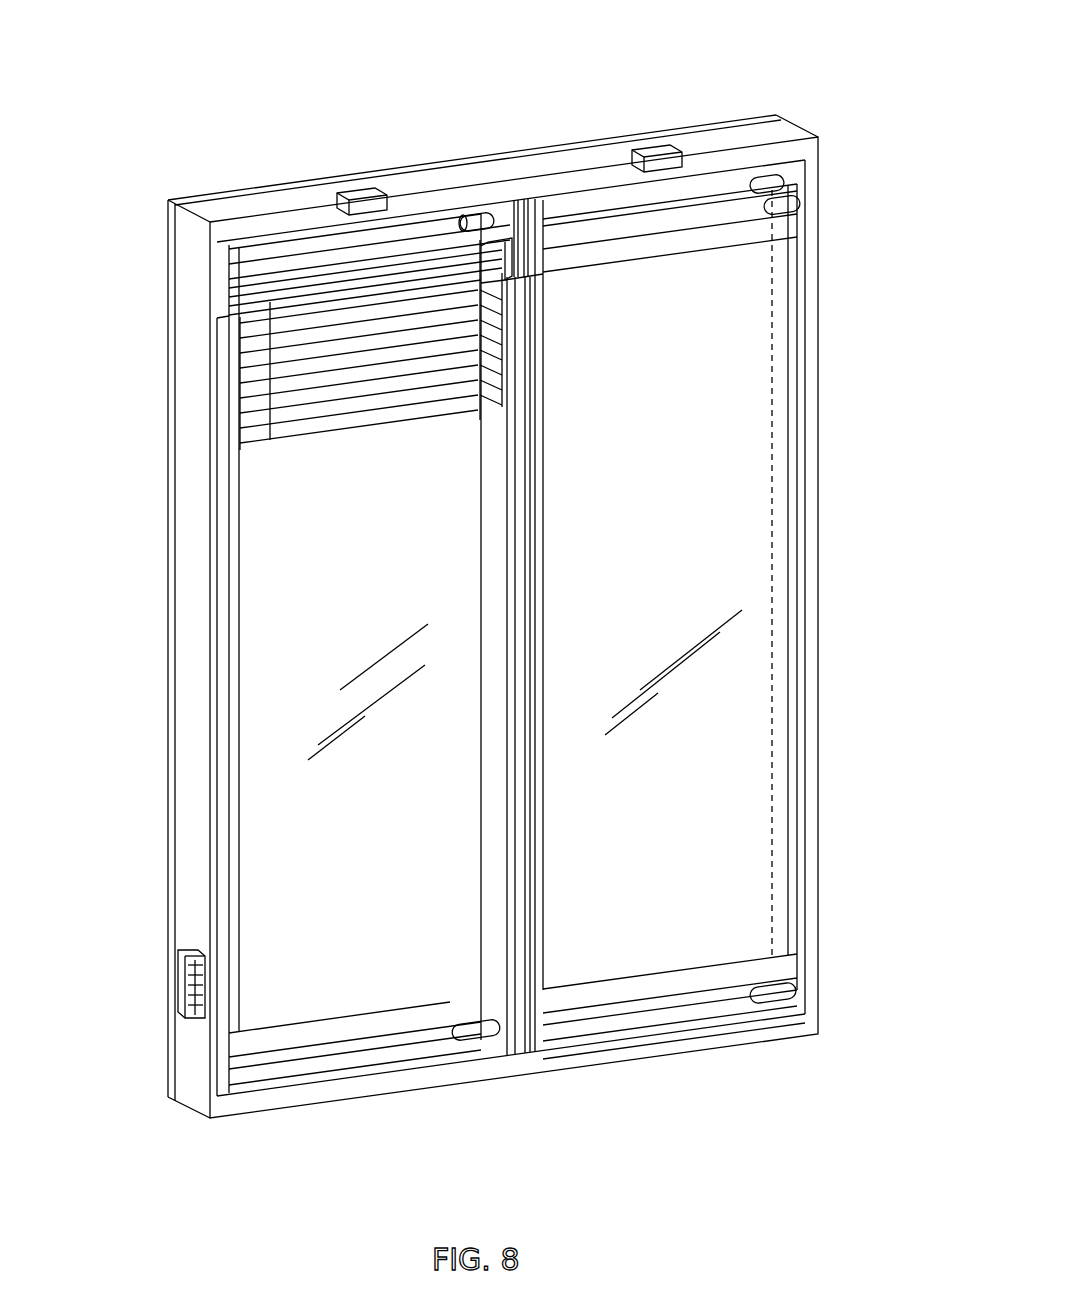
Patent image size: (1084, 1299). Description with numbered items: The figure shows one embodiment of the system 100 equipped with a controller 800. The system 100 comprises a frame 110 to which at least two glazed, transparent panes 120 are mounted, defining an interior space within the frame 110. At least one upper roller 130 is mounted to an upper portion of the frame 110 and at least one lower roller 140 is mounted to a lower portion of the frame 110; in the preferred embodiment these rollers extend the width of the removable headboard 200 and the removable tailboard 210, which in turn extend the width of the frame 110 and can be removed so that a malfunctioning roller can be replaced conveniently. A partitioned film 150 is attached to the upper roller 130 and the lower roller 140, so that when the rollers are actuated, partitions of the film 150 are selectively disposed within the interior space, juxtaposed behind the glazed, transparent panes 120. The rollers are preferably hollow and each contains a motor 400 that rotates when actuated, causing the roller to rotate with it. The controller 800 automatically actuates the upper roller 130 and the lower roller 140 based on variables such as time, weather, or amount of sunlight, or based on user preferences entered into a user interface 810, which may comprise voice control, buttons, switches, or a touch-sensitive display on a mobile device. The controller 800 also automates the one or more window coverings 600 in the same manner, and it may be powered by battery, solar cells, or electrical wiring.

The system 100 is at (168, 58).
The frame 110 is at (183, 356).
The glazed, transparent panes 120 is at (170, 482).
The upper roller 130 is at (412, 214).
The lower roller 140 is at (456, 1034).
The partitioned film 150 is at (774, 735).
The removable headboard 200 is at (822, 196).
The removable tailboard 210 is at (793, 987).
The motor 400 is at (478, 212).
The window coverings 600 is at (362, 428).
The controller 800 is at (358, 187).
The user interface 810 is at (182, 958).